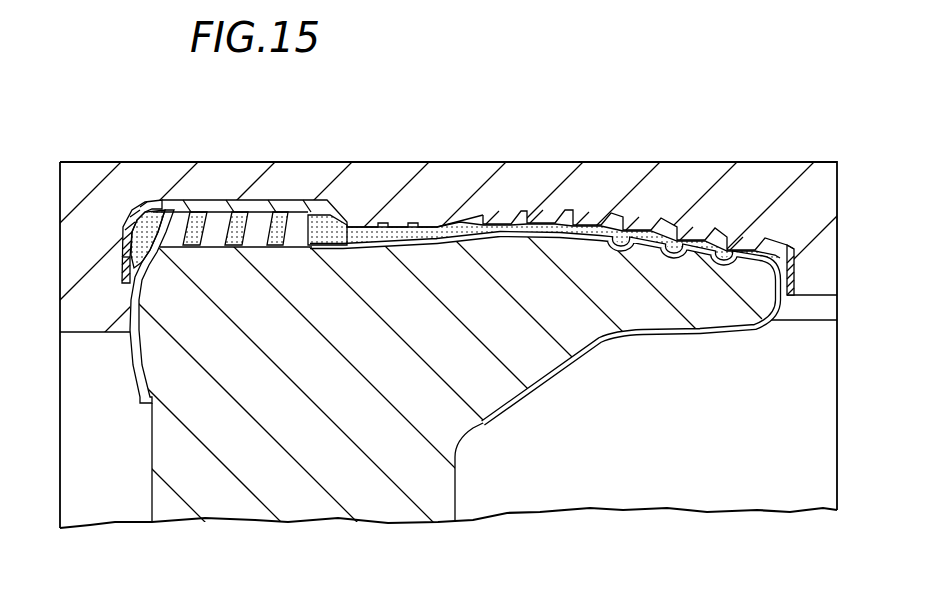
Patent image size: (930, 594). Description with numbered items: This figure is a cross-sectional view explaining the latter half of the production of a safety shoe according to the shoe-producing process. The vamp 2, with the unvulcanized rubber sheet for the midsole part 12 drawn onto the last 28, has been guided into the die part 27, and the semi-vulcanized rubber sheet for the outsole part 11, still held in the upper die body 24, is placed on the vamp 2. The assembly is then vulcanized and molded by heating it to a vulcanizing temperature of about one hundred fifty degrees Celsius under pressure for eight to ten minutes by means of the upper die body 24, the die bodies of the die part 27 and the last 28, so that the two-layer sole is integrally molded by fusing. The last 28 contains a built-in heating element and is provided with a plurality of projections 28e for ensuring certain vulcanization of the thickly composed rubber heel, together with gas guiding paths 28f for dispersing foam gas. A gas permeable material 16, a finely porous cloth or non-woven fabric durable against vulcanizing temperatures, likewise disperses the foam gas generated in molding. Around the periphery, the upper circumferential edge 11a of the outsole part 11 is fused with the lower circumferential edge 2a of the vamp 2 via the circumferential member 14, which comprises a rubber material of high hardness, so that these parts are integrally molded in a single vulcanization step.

The vamp 2 is at (135, 350).
The lower circumferential edge of the vamp 2a is at (147, 202).
The outsole part 11 is at (317, 205).
The upper circumferential edge of the outsole part 11a is at (123, 262).
The midsole part 12 is at (345, 226).
The circumferential member 14 is at (122, 278).
The gas permeable material 16 is at (570, 240).
The upper die body 24 is at (531, 172).
The die part 27 is at (448, 161).
The last 28 is at (338, 480).
The projections 28e is at (189, 215).
The gas guiding paths 28f is at (633, 213).